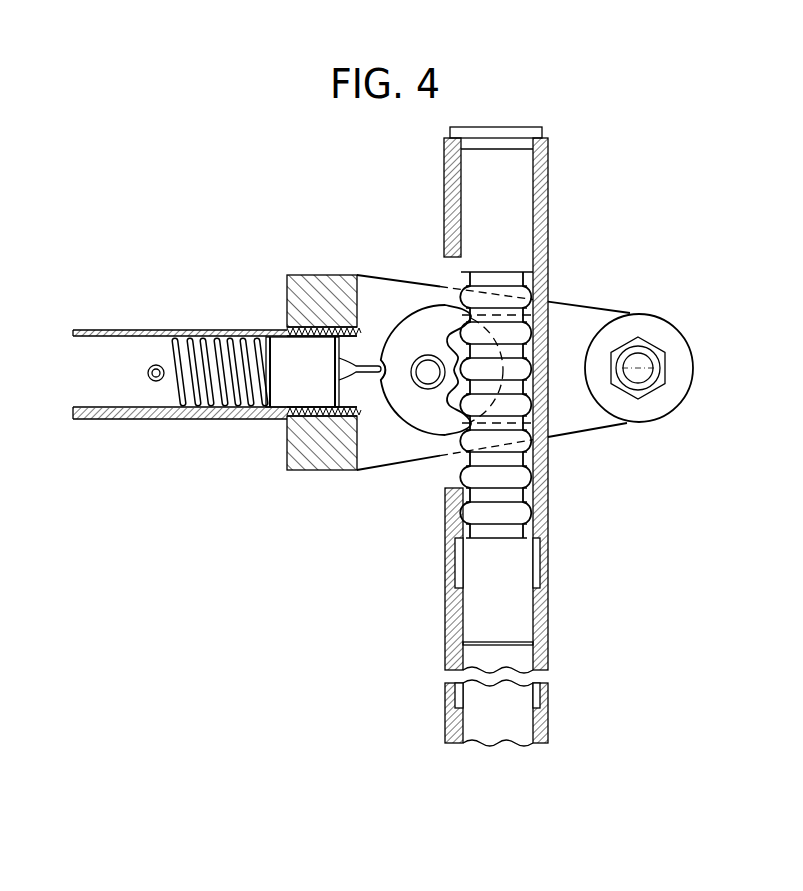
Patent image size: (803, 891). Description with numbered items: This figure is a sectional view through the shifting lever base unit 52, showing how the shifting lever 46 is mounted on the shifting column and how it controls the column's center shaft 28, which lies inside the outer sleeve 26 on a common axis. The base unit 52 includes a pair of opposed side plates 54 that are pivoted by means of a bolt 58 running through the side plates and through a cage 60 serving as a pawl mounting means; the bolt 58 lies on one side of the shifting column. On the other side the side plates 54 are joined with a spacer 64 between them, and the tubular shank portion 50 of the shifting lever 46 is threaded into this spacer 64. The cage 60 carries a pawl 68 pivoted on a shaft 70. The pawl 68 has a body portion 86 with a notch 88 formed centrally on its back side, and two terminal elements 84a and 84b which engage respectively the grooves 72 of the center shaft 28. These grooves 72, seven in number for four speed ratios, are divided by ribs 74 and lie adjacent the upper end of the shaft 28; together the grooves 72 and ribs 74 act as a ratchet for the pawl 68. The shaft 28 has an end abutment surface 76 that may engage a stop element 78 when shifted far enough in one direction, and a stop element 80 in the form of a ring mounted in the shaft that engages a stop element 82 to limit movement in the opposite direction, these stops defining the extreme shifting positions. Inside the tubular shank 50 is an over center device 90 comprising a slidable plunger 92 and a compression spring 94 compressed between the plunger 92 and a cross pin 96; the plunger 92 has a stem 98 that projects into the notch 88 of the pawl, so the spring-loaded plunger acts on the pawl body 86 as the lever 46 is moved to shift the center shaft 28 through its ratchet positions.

The outer sleeve 26 is at (549, 541).
The center shaft 28 is at (508, 588).
The shifting lever 46 is at (127, 328).
The shank portion 50 is at (168, 330).
The base unit 52 is at (345, 476).
The side plates 54 is at (575, 298).
The bolt 58 is at (646, 368).
The cage 60 is at (590, 307).
The spacer 64 is at (298, 282).
The pawl 68 is at (403, 307).
The shaft 70 is at (434, 386).
The grooves 72 is at (542, 485).
The ribs 74 is at (446, 498).
The end abutment surface 76 is at (500, 270).
The stop element 78 is at (517, 148).
The stop element 80 is at (478, 645).
The stop element 82 is at (548, 722).
The terminal element 84a is at (455, 311).
The terminal element 84b is at (450, 442).
The body portion 86 is at (388, 341).
The notch 88 is at (391, 400).
The over center device 90 is at (222, 331).
The plunger 92 is at (281, 392).
The compression spring 94 is at (191, 410).
The cross pin 96 is at (148, 373).
The stem 98 is at (347, 362).